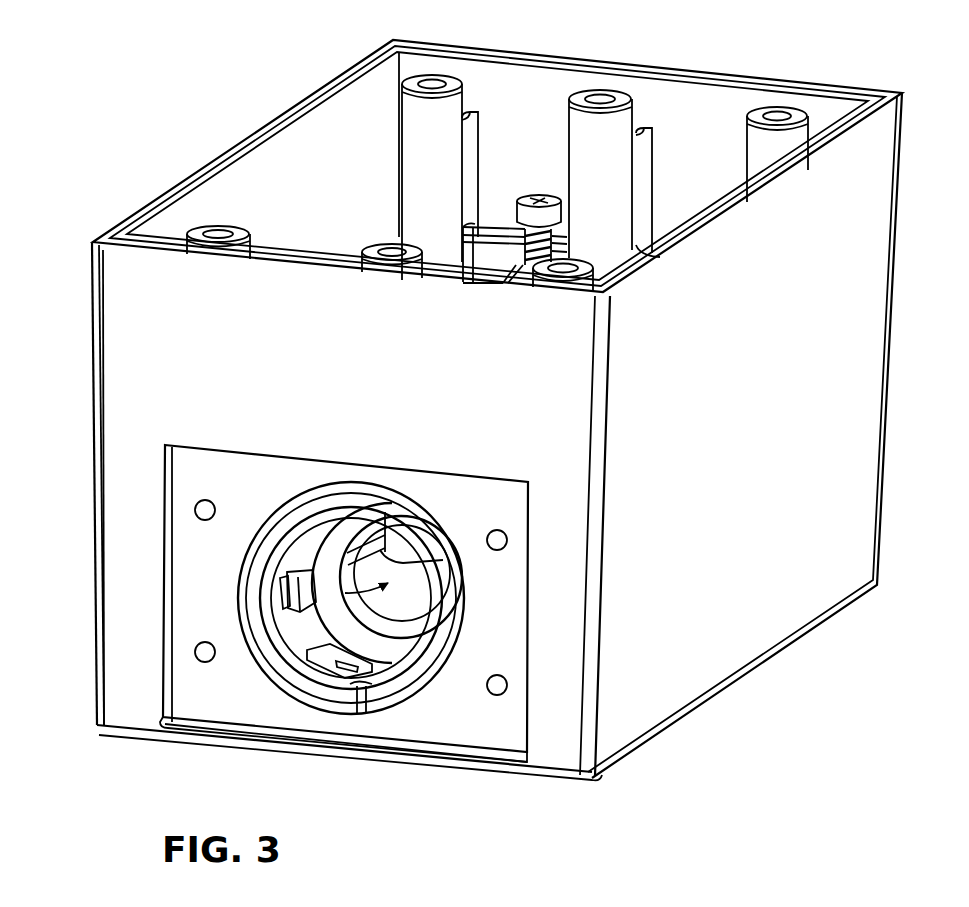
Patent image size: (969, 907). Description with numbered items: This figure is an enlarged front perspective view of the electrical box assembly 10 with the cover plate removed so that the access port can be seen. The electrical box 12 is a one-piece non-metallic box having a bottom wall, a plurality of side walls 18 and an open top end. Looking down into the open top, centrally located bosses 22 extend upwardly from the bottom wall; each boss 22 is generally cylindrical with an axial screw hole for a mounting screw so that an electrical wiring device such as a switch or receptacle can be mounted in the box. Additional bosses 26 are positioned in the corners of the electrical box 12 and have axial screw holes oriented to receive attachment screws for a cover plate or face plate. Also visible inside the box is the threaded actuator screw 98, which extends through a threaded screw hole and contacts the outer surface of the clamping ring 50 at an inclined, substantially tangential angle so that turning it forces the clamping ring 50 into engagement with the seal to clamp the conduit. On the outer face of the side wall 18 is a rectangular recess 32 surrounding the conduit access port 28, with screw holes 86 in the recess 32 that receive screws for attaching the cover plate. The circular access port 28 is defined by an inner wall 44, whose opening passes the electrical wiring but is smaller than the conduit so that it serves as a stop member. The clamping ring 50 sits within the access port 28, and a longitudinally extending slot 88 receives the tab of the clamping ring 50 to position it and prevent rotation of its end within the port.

The electrical box assembly 10 is at (237, 84).
The electrical box 12 is at (91, 312).
The side wall 18 is at (137, 388).
The centrally located boss 22 is at (628, 123).
The corner boss 26 is at (398, 158).
The actuator screw 98 is at (532, 197).
The recess 32 is at (485, 733).
The screw holes 86 is at (200, 522).
The inner wall 44 is at (358, 508).
The conduit access port 28 is at (322, 552).
The clamping ring 50 is at (300, 662).
The longitudinally extending slot 88 is at (352, 714).